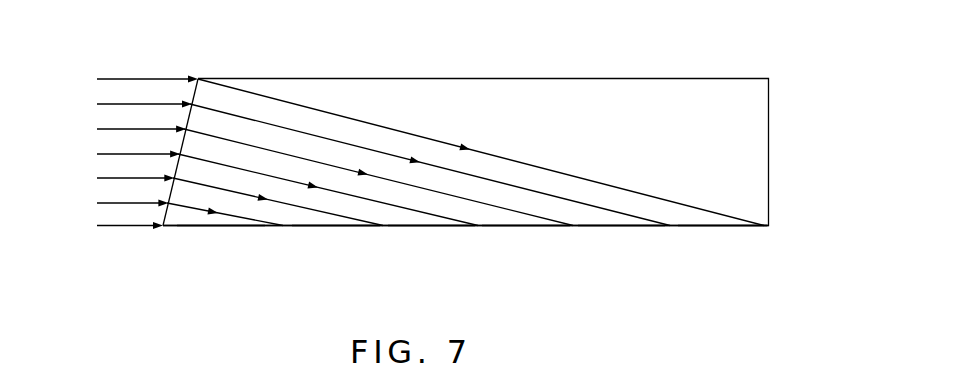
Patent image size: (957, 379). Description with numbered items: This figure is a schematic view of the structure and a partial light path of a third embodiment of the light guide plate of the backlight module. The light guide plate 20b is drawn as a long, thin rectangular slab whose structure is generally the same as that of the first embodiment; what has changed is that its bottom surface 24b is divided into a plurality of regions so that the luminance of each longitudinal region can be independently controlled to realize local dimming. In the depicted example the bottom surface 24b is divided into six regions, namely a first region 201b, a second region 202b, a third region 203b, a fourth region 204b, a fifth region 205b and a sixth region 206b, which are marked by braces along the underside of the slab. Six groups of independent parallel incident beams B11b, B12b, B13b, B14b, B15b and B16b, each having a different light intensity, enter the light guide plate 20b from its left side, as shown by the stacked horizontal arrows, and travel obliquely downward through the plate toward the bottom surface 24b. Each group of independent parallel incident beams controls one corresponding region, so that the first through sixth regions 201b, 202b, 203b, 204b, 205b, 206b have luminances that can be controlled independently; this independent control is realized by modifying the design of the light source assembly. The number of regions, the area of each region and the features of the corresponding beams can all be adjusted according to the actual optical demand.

The light guide plate 20b is at (548, 107).
The bottom surface 24b is at (677, 226).
The first region 201b is at (678, 232).
The second region 202b is at (578, 232).
The third region 203b is at (482, 232).
The fourth region 204b is at (388, 232).
The fifth region 205b is at (292, 232).
The sixth region 206b is at (177, 232).
The independent parallel incident beam B11b is at (95, 80).
The independent parallel incident beam B12b is at (95, 104).
The independent parallel incident beam B13b is at (95, 130).
The independent parallel incident beam B14b is at (95, 154).
The independent parallel incident beam B15b is at (95, 178).
The independent parallel incident beam B16b is at (95, 204).